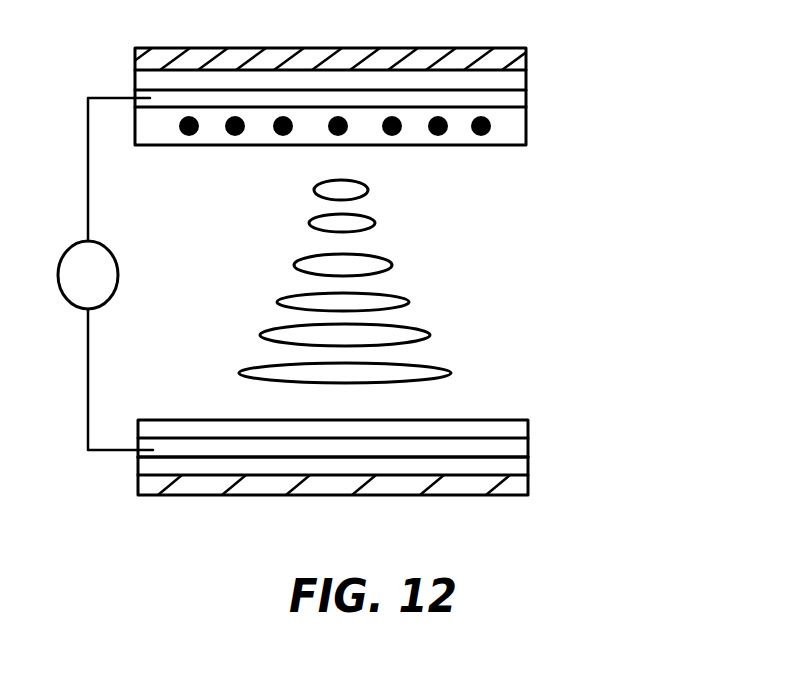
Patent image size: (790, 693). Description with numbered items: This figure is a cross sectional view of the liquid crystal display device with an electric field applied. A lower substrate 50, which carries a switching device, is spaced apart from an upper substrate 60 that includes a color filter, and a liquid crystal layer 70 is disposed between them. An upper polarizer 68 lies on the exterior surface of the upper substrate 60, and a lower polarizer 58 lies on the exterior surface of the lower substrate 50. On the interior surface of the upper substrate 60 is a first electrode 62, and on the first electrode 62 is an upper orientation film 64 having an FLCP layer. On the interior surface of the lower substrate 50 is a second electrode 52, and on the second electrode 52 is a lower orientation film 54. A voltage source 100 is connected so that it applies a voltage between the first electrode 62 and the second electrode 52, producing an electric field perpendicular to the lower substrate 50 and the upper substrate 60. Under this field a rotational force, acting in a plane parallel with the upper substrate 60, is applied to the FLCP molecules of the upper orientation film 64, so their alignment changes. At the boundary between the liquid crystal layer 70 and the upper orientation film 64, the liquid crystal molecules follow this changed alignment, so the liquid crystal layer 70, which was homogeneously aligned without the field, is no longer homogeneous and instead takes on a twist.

The lower substrate 50 is at (512, 468).
The second electrode 52 is at (518, 448).
The lower orientation film 54 is at (518, 428).
The lower polarizer 58 is at (262, 490).
The upper substrate 60 is at (517, 75).
The first electrode 62 is at (515, 99).
The upper orientation film 64 is at (513, 127).
The upper polarizer 68 is at (257, 58).
The liquid crystal layer 70 is at (517, 177).
The voltage source 100 is at (113, 253).